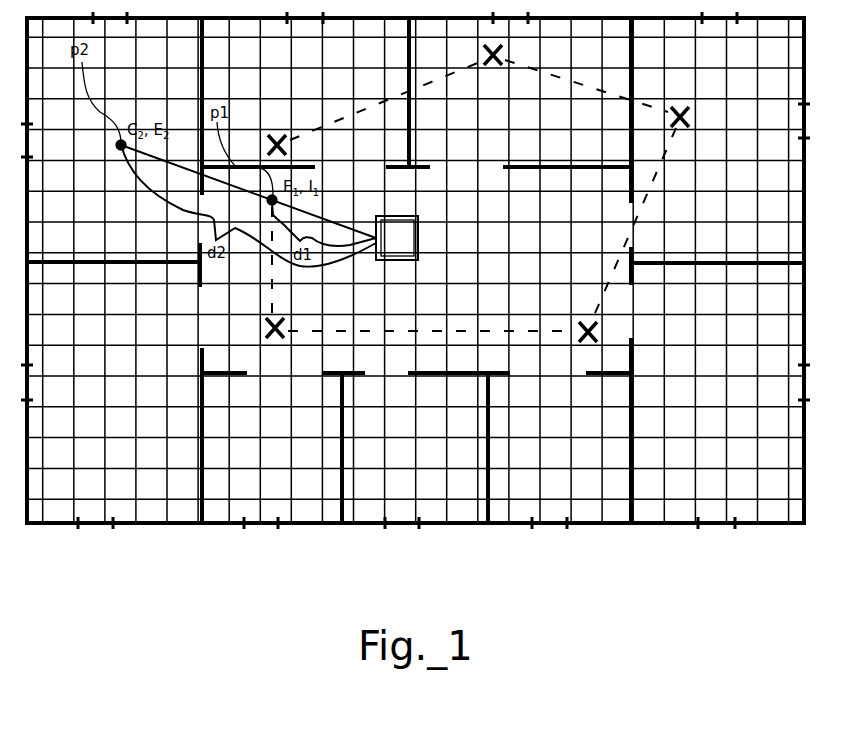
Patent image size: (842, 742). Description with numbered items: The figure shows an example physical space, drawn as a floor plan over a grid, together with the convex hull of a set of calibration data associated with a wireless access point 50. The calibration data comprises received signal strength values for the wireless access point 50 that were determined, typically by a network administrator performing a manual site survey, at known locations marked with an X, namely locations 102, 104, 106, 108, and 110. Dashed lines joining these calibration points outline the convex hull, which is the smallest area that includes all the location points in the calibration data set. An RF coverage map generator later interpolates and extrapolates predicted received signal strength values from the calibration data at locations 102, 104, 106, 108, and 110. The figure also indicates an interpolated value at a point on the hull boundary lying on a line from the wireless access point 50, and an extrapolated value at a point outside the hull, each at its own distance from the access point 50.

The wireless access point 50 is at (418, 238).
The location 102 is at (503, 55).
The location 104 is at (690, 120).
The location 106 is at (598, 336).
The location 108 is at (266, 338).
The location 110 is at (288, 147).